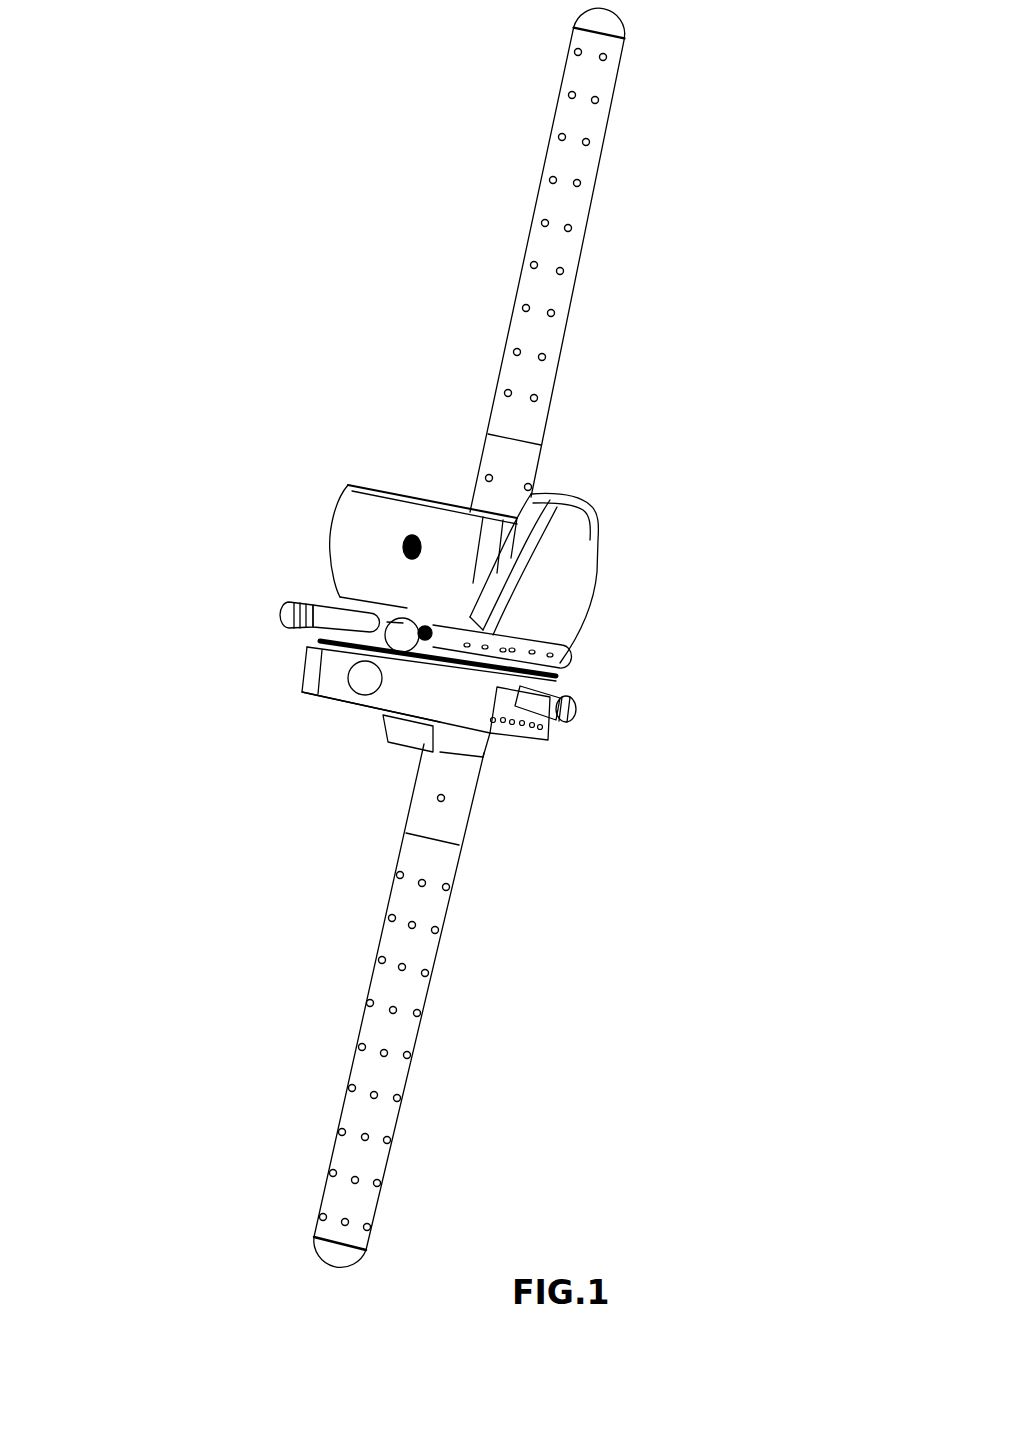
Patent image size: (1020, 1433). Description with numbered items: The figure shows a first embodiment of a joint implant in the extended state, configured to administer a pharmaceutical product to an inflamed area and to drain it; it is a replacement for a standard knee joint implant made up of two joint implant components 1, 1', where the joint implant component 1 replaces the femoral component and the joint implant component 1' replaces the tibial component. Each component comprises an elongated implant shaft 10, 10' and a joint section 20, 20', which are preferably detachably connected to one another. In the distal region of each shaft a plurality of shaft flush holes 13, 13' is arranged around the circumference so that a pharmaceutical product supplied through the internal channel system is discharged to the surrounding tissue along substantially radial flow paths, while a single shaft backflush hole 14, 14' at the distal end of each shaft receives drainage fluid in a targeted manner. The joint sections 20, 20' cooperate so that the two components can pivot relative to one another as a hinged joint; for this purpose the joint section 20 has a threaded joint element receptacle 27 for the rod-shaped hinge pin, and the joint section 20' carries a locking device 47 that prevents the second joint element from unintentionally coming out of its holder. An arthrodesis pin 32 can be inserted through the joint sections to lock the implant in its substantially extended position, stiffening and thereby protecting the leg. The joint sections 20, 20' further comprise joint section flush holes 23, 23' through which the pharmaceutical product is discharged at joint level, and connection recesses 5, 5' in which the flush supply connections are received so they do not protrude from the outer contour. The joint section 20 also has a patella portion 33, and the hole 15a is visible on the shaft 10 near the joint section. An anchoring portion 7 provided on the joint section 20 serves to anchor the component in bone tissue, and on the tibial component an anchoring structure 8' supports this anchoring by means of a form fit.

The joint implant component 1 is at (178, 241).
The implant shaft 10 is at (373, 236).
The shaft flush holes 13 is at (597, 270).
The shaft backflush hole 14 is at (675, 19).
The hole 15a is at (531, 488).
The anchoring portion 7 is at (418, 607).
The joint element receptacle 27 is at (404, 549).
The connection recess 5 is at (341, 590).
The arthrodesis pin 32 is at (322, 627).
The patella portion 33 is at (582, 528).
The joint section flush holes 23 is at (519, 634).
The joint implant component 1' is at (189, 863).
The implant shaft 10' is at (189, 1019).
The shaft flush holes 13' is at (415, 997).
The shaft backflush hole 14' is at (290, 1305).
The joint section 20 is at (517, 702).
The connection recess 5' is at (300, 683).
The locking device 47 is at (578, 706).
The anchoring structure 8' is at (350, 747).
The joint section flush holes 23' is at (598, 754).
The joint section 20' is at (494, 775).